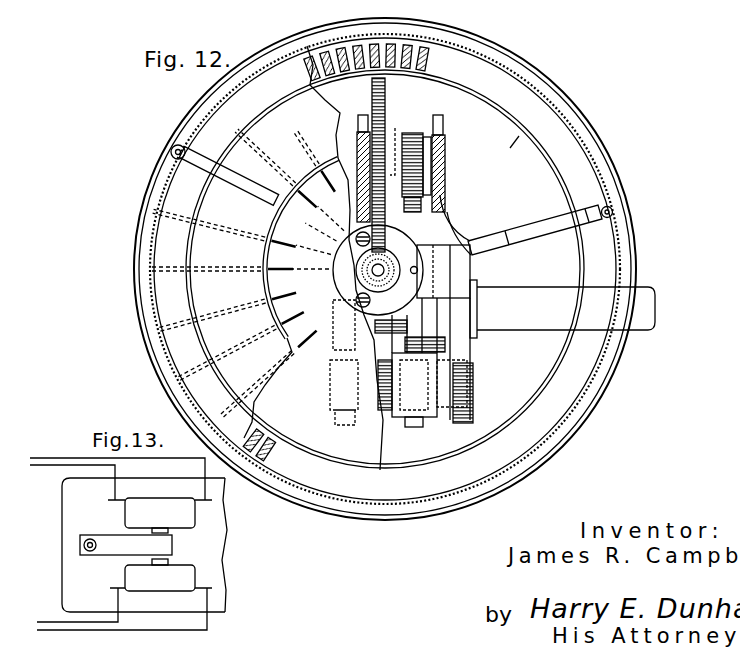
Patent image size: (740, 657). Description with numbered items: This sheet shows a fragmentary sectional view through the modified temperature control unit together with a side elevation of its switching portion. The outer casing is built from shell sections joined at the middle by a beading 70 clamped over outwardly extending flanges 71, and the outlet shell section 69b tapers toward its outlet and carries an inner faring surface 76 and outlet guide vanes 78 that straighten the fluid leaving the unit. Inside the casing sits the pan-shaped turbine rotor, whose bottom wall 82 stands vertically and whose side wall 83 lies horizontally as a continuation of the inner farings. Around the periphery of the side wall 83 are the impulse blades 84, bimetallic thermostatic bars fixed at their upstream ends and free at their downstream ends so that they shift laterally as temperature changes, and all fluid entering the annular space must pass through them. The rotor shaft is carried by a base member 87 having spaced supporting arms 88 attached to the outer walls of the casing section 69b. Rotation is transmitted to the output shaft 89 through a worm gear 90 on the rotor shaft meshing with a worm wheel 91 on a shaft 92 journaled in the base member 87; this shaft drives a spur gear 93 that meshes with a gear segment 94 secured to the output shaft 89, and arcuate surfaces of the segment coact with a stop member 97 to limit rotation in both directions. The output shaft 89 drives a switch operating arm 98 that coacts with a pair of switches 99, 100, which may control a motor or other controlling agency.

In FIG. 12, the shell section 69b is at (160, 233).
In FIG. 12, the beading 70 is at (569, 111).
In FIG. 12, the flanges 71 is at (351, 6).
In FIG. 12, the inner faring surface 76 is at (330, 107).
In FIG. 12, the outlet guide vanes 78 is at (165, 301).
In FIG. 12, the bottom wall 82 is at (553, 178).
In FIG. 12, the side wall 83 is at (507, 149).
In FIG. 12, the impulse blades 84 is at (332, 44).
In FIG. 12, the base member 87 is at (451, 224).
In FIG. 12, the supporting arms 88 is at (252, 196).
In FIG. 12, the output shaft 89 is at (630, 290).
In FIG. 13, the output shaft 89 is at (89, 538).
In FIG. 12, the worm gear 90 is at (336, 264).
In FIG. 12, the worm wheel 91 is at (386, 96).
In FIG. 12, the shaft 92 is at (399, 142).
In FIG. 12, the spur gear 93 is at (414, 134).
In FIG. 12, the gear segment 94 is at (417, 427).
In FIG. 12, the stop member 97 is at (383, 428).
In FIG. 13, the switch operating arm 98 is at (108, 556).
In FIG. 13, the switch 99 is at (195, 520).
In FIG. 13, the switch 100 is at (195, 578).